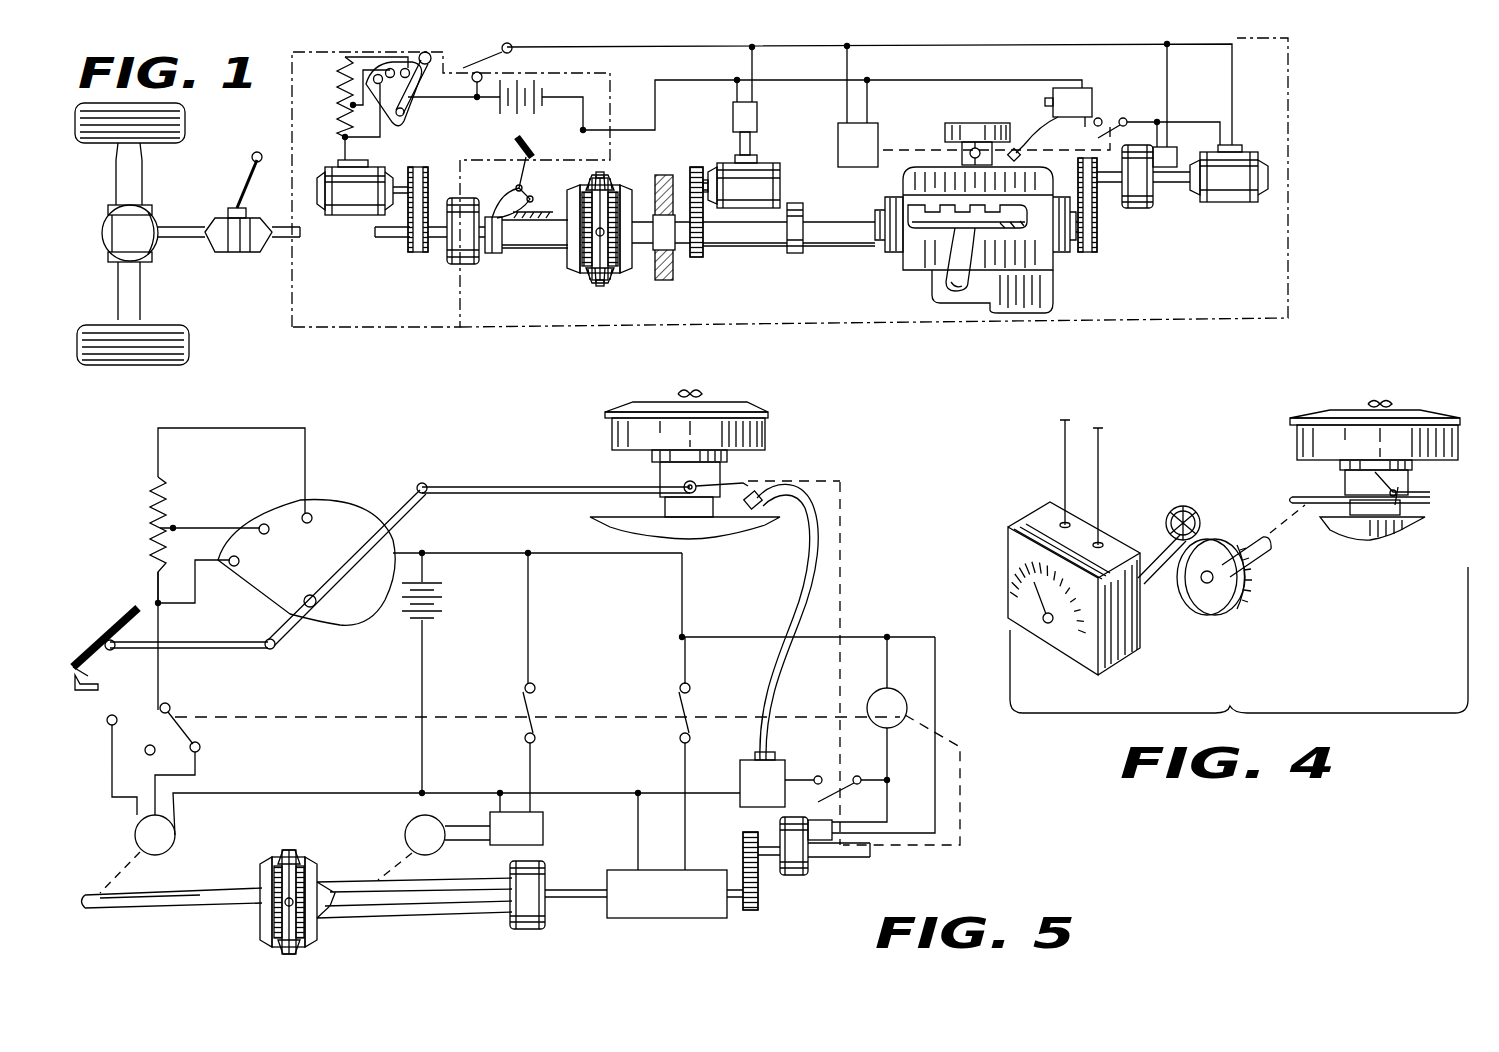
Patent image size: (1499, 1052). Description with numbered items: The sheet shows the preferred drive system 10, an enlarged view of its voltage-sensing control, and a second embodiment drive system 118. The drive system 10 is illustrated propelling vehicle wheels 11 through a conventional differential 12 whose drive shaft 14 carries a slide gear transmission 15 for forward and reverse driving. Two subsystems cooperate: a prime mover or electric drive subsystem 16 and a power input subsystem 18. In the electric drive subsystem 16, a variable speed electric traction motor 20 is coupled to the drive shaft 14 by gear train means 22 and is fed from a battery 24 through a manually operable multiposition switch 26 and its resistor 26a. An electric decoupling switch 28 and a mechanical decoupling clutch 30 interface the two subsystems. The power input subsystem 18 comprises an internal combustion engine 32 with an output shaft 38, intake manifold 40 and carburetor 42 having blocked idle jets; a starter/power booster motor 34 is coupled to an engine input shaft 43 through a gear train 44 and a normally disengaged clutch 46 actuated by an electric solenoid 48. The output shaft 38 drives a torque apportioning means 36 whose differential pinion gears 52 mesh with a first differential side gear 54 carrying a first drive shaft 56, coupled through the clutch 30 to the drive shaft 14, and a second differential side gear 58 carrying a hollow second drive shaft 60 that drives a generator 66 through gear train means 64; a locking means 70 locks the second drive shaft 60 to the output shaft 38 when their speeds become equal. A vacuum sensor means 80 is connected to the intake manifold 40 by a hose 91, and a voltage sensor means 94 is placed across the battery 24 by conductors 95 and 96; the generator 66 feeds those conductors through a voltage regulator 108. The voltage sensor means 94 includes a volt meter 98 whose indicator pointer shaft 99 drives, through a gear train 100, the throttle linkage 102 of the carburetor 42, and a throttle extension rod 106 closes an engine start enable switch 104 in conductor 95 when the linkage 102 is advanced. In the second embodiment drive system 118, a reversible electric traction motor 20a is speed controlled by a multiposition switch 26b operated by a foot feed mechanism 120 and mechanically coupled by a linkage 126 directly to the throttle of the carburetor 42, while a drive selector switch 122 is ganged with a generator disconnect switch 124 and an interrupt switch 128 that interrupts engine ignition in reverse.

In FIG. 1, the drive system 10 is at (182, 380).
In FIG. 1, the vehicle wheels 11 is at (185, 120).
In FIG. 1, the differential 12 is at (150, 258).
In FIG. 1, the drive shaft 14 is at (300, 234).
In FIG. 5, the drive shaft 14 is at (186, 908).
In FIG. 1, the slide gear transmission 15 is at (238, 252).
In FIG. 1, the prime mover subsystem 16 is at (350, 307).
In FIG. 1, the power input subsystem 18 is at (864, 308).
In FIG. 1, the electric traction motor 20 is at (325, 178).
In FIG. 5, the reversible electric traction motor 20a is at (178, 830).
In FIG. 1, the gear train means 22 is at (420, 165).
In FIG. 1, the battery 24 is at (535, 112).
In FIG. 5, the battery 24 is at (432, 582).
In FIG. 1, the multiposition switch 26 is at (418, 118).
In FIG. 1, the resistor 26a is at (340, 97).
In FIG. 5, the multiposition switch 26b is at (352, 600).
In FIG. 1, the electric decoupling switch 28 is at (512, 58).
In FIG. 1, the mechanical decoupling clutch 30 is at (448, 266).
In FIG. 1, the internal combustion engine 32 is at (1002, 300).
In FIG. 5, the internal combustion engine 32 is at (683, 920).
In FIG. 1, the starter/power booster motor 34 is at (1232, 205).
In FIG. 5, the starter/power booster motor 34 is at (903, 698).
In FIG. 1, the torque apportioning means 36 is at (622, 238).
In FIG. 5, the torque apportioning means 36 is at (258, 928).
In FIG. 1, the engine output shaft 38 is at (852, 250).
In FIG. 1, the intake manifold 40 is at (928, 166).
In FIG. 4, the intake manifold 40 is at (1350, 471).
In FIG. 1, the carburetor 42 is at (972, 142).
In FIG. 5, the carburetor 42 is at (660, 470).
In FIG. 4, the carburetor 42 is at (1347, 472).
In FIG. 1, the engine input shaft 43 is at (1072, 258).
In FIG. 1, the gear train 44 is at (1098, 238).
In FIG. 5, the gear train 44 is at (758, 912).
In FIG. 1, the clutch 46 is at (1140, 210).
In FIG. 5, the clutch 46 is at (808, 866).
In FIG. 1, the electric solenoid 48 is at (1177, 150).
In FIG. 5, the electric solenoid 48 is at (822, 818).
In FIG. 1, the differential pinion gears 52 is at (610, 173).
In FIG. 1, the first differential side gear 54 is at (572, 206).
In FIG. 1, the first drive shaft 56 is at (547, 248).
In FIG. 1, the second differential side gear 58 is at (636, 186).
In FIG. 1, the second drive shaft 60 is at (742, 250).
In FIG. 1, the gear train means 64 is at (700, 166).
In FIG. 1, the generator 66 is at (780, 155).
In FIG. 5, the generator 66 is at (405, 826).
In FIG. 1, the locking means 70 is at (793, 258).
In FIG. 5, the locking means 70 is at (515, 918).
In FIG. 1, the vacuum sensor means 80 is at (1082, 113).
In FIG. 5, the vacuum sensor means 80 is at (772, 793).
In FIG. 1, the hose 91 is at (1052, 110).
In FIG. 1, the voltage sensor means 94 is at (870, 155).
In FIG. 4, the voltage sensor means 94 is at (1280, 640).
In FIG. 1, the conductor 95 is at (705, 86).
In FIG. 1, the conductor 96 is at (685, 52).
In FIG. 4, the volt meter 98 is at (1120, 652).
In FIG. 4, the indicator pointer shaft 99 is at (1150, 545).
In FIG. 4, the gear train 100 is at (1232, 602).
In FIG. 1, the throttle linkage 102 is at (884, 150).
In FIG. 4, the throttle linkage 102 is at (1297, 497).
In FIG. 1, the engine start enable switch 104 is at (1102, 115).
In FIG. 5, the engine start enable switch 104 is at (836, 775).
In FIG. 1, the throttle extension rod 106 is at (996, 133).
In FIG. 5, the throttle extension rod 106 is at (738, 477).
In FIG. 4, the throttle extension rod 106 is at (1420, 492).
In FIG. 1, the voltage regulator 108 is at (757, 115).
In FIG. 5, the voltage regulator 108 is at (543, 830).
In FIG. 5, the drive system 118 is at (658, 459).
In FIG. 5, the foot feed mechanism 120 is at (125, 610).
In FIG. 5, the drive selector switch 122 is at (142, 705).
In FIG. 5, the generator disconnect switch 124 is at (535, 694).
In FIG. 5, the linkage 126 is at (462, 487).
In FIG. 5, the interrupt switch 128 is at (680, 688).